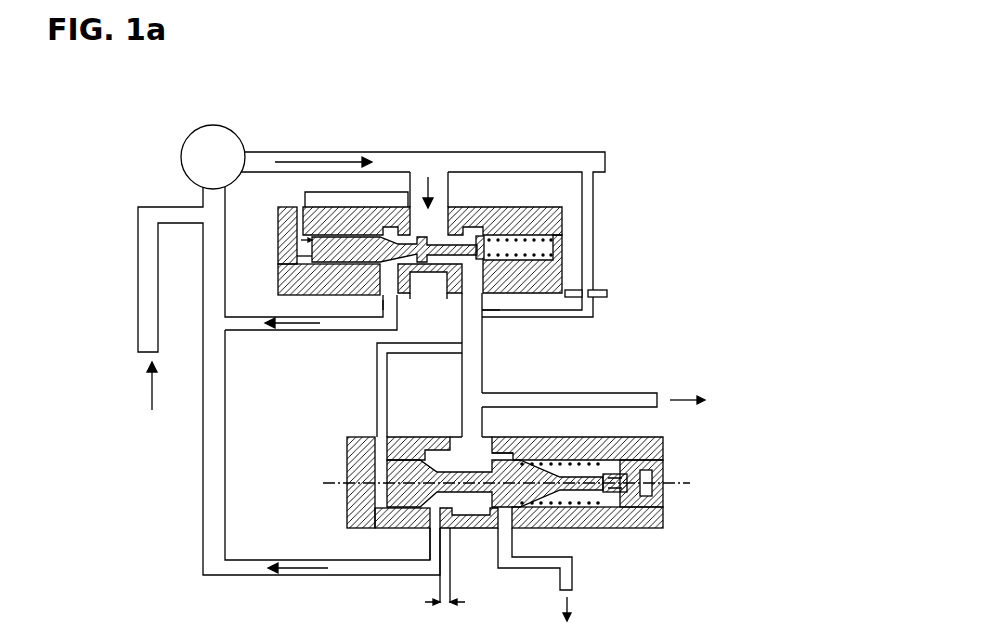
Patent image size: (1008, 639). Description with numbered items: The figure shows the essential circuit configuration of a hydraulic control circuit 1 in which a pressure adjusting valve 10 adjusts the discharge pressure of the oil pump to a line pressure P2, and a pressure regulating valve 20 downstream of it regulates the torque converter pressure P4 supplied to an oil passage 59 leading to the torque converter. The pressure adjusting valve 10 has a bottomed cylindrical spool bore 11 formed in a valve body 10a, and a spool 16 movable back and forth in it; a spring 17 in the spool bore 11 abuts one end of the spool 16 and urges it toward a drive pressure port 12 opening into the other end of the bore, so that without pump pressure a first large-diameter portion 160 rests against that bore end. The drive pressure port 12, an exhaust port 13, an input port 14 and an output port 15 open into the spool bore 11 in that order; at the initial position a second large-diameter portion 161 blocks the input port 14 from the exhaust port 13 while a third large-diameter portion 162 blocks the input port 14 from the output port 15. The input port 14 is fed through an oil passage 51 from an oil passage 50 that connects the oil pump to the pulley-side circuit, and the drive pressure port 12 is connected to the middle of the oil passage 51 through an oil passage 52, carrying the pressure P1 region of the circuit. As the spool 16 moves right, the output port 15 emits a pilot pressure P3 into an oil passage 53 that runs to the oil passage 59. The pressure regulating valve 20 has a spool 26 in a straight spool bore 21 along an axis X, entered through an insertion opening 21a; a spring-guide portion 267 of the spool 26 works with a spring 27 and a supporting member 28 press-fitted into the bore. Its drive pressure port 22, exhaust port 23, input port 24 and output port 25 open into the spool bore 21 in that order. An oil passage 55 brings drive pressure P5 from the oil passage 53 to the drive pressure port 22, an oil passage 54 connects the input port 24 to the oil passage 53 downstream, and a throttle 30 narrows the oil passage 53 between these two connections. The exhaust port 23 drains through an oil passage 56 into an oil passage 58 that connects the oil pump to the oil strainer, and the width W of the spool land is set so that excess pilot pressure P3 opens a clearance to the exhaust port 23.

The hydraulic control circuit 1 is at (567, 125).
The pressure adjusting valve 10 is at (278, 193).
The valve body 10a is at (278, 283).
The spool bore 11 is at (278, 264).
The drive pressure port 12 is at (278, 213).
The exhaust port 13 is at (396, 282).
The input port 14 is at (413, 220).
The output port 15 is at (462, 282).
The spool 16 is at (278, 247).
The spring 17 is at (533, 210).
The pressure regulating valve 20 is at (333, 521).
The spool bore 21 is at (663, 470).
The insertion opening 21a is at (668, 500).
The drive pressure port 22 is at (347, 443).
The exhaust port 23 is at (433, 532).
The input port 24 is at (476, 430).
The output port 25 is at (505, 530).
The spool 26 is at (347, 468).
The spring 27 is at (580, 460).
The supporting member 28 is at (640, 505).
The throttle 30 is at (470, 368).
The oil passage 50 is at (375, 162).
The oil passage 51 is at (447, 180).
The oil passage 52 is at (330, 192).
The oil passage 53 is at (482, 346).
The oil passage 54 is at (476, 402).
The oil passage 55 is at (377, 384).
The oil passage 56 is at (240, 576).
The oil passage 58 is at (156, 265).
The oil passage 59 is at (570, 394).
The first large-diameter portion 160 is at (320, 264).
The second large-diameter portion 161 is at (507, 210).
The third large-diameter portion 162 is at (482, 237).
The spring-guide portion 267 is at (525, 455).
The pressure P1 is at (297, 262).
The line pressure P2 is at (518, 162).
The pilot pressure P3 is at (472, 316).
The torque converter pressure P4 is at (637, 400).
The drive pressure P5 is at (380, 405).
The axis X is at (701, 486).
The width W is at (454, 566).